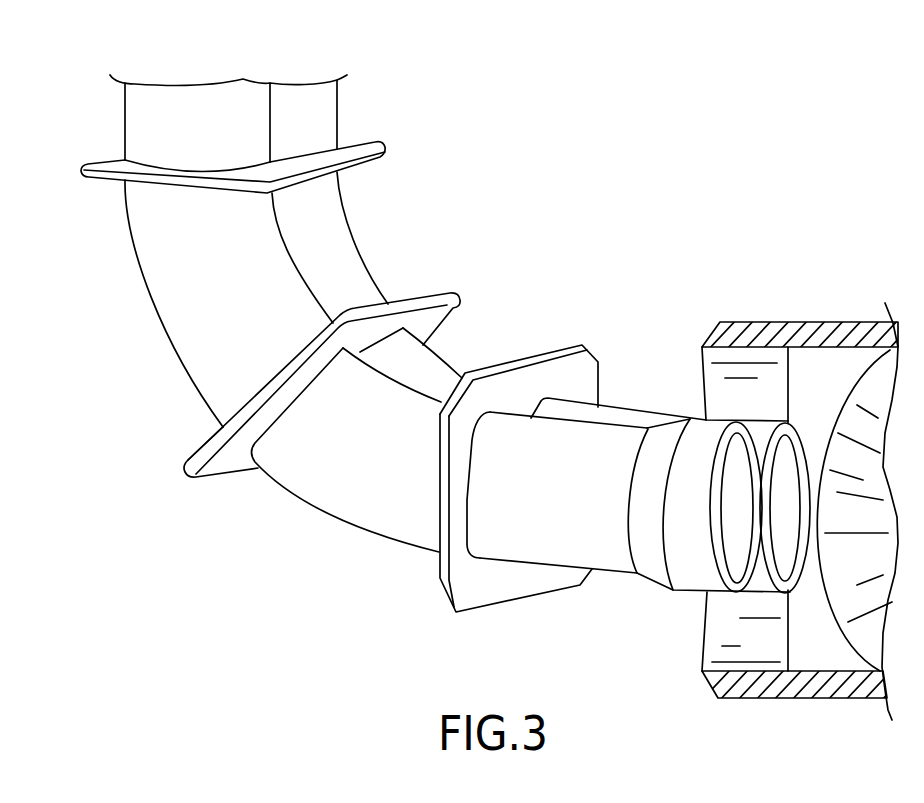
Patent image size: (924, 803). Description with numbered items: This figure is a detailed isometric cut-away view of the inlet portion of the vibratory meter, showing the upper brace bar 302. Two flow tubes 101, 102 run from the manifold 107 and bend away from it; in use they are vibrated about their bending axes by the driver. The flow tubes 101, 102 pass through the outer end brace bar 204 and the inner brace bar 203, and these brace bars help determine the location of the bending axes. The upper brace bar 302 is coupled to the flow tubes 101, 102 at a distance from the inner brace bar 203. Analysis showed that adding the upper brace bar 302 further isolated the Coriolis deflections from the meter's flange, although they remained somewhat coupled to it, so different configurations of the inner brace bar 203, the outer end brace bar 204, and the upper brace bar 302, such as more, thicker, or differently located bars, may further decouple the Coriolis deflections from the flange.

The flow tube 101 is at (146, 297).
The flow tube 102 is at (366, 267).
The upper brace bar 302 is at (378, 147).
The inner brace bar 203 is at (222, 478).
The outer end brace bar 204 is at (585, 345).
The manifold 107 is at (855, 322).